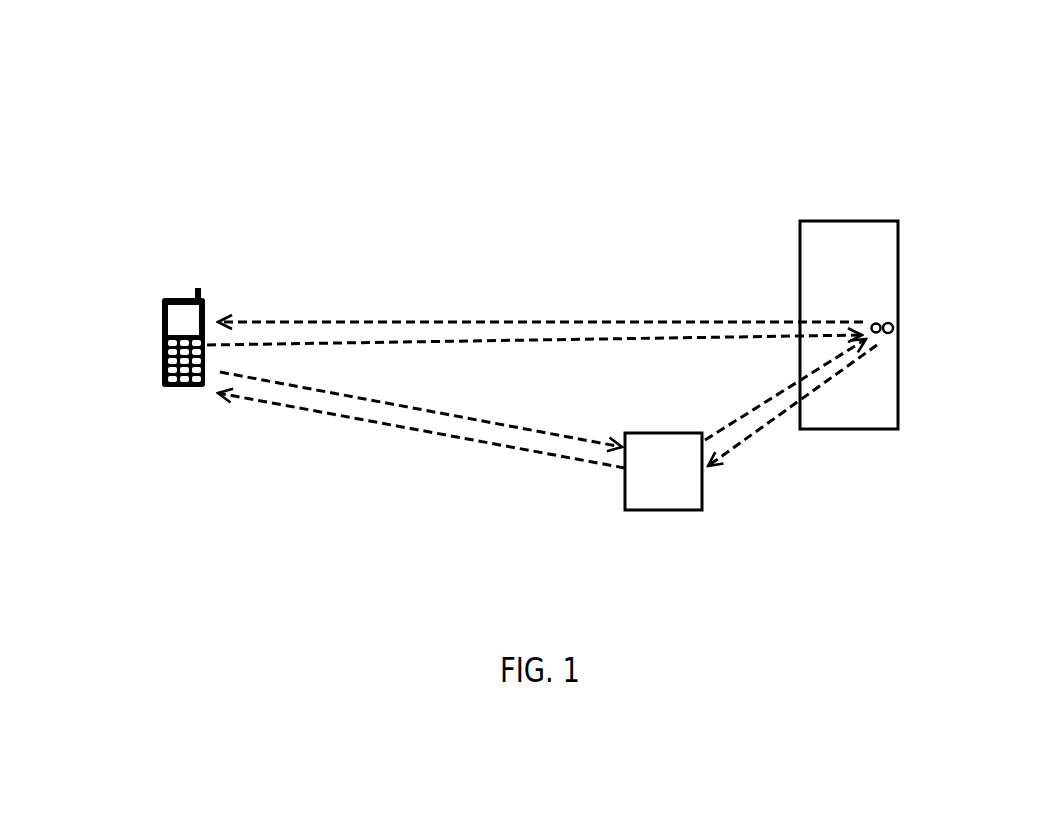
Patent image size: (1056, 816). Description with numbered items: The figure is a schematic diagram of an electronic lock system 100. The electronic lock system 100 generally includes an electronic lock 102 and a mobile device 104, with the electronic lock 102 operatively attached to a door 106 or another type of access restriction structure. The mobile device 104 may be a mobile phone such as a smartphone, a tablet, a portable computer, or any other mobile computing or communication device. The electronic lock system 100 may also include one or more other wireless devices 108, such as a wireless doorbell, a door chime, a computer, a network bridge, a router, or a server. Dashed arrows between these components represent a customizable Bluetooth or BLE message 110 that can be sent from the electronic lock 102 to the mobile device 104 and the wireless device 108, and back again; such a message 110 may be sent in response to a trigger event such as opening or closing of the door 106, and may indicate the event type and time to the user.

The electronic lock system 100 is at (802, 140).
The electronic lock 102 is at (896, 346).
The mobile device 104 is at (203, 280).
The door 106 is at (872, 436).
The wireless device 108 is at (662, 517).
The Bluetooth or BLE message 110 is at (500, 345).